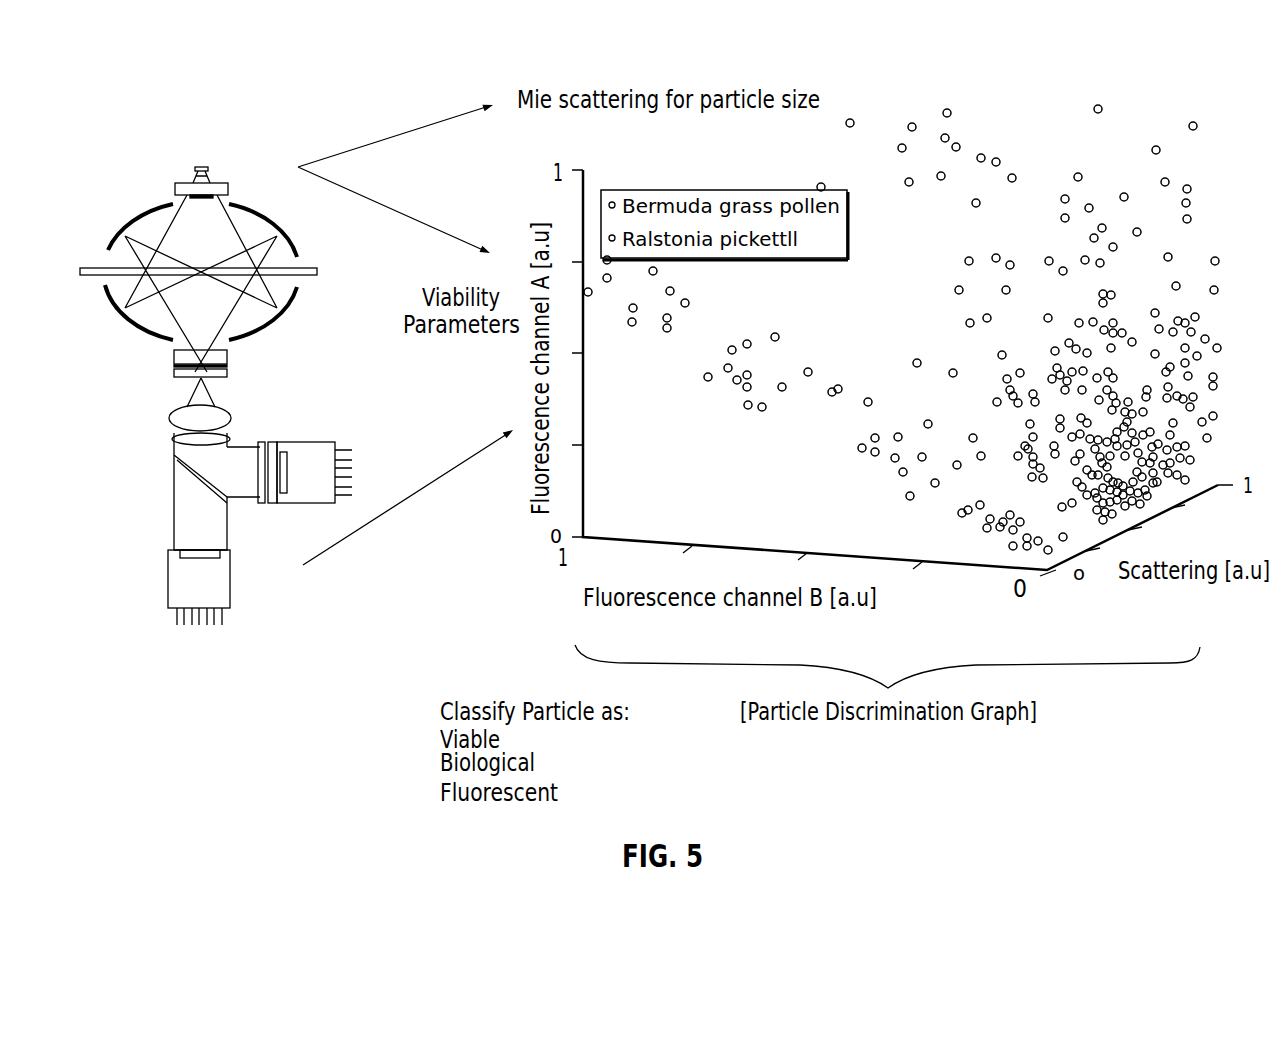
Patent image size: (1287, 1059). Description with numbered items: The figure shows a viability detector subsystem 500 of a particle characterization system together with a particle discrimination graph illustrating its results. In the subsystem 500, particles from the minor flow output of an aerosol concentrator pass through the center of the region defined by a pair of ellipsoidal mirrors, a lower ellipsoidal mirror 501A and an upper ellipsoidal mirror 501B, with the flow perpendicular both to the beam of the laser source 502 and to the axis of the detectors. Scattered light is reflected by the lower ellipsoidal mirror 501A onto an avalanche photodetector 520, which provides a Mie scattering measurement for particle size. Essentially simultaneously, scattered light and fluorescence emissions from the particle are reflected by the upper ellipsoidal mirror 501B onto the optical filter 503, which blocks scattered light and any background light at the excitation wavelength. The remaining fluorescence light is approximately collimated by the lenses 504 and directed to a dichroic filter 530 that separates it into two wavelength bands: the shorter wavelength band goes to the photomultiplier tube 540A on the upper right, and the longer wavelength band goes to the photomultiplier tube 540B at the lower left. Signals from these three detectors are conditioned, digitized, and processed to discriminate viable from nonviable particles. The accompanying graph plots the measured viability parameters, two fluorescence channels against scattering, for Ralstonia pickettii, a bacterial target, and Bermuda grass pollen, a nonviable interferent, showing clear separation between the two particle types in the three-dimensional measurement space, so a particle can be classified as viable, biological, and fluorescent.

The viability detector subsystem 500 is at (161, 109).
The avalanche photodetector 520 is at (186, 168).
The lower ellipsoidal mirror 501A is at (162, 337).
The upper ellipsoidal mirror 501B is at (137, 215).
The laser source 502 is at (85, 281).
The optical filter 503 is at (272, 336).
The lenses 504 is at (161, 411).
The dichroic filter 530 is at (163, 506).
The photomultiplier tube 540A is at (333, 408).
The photomultiplier tube 540B is at (176, 585).